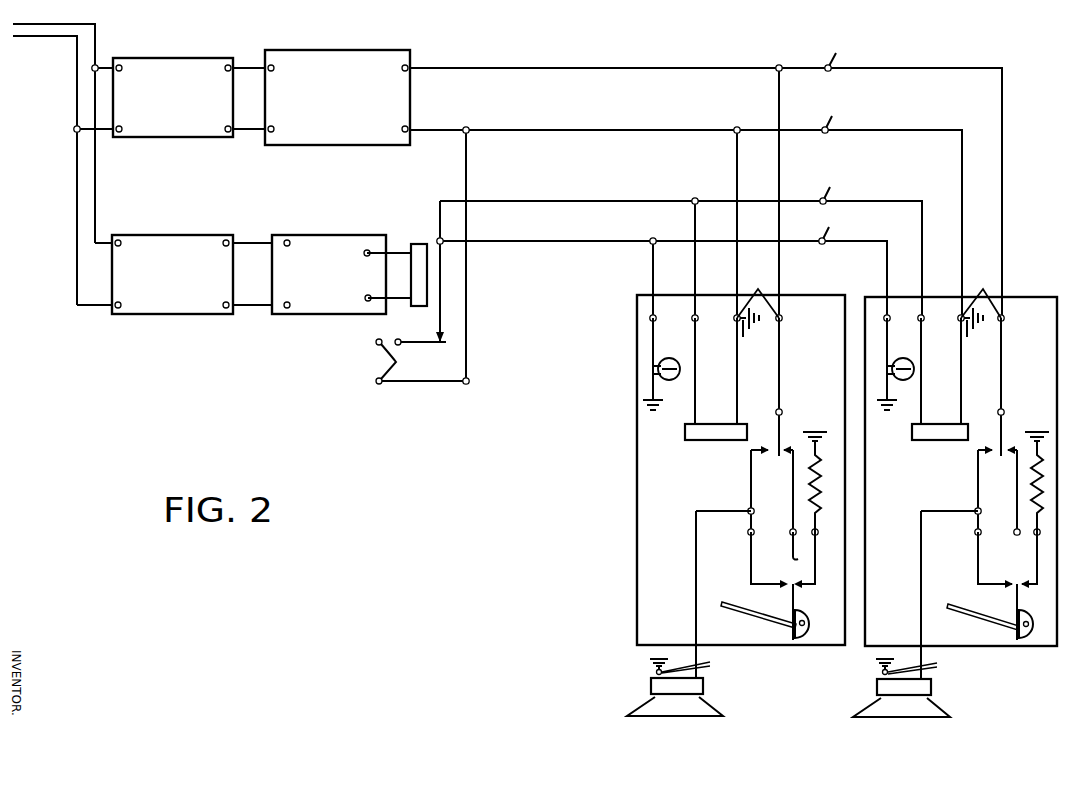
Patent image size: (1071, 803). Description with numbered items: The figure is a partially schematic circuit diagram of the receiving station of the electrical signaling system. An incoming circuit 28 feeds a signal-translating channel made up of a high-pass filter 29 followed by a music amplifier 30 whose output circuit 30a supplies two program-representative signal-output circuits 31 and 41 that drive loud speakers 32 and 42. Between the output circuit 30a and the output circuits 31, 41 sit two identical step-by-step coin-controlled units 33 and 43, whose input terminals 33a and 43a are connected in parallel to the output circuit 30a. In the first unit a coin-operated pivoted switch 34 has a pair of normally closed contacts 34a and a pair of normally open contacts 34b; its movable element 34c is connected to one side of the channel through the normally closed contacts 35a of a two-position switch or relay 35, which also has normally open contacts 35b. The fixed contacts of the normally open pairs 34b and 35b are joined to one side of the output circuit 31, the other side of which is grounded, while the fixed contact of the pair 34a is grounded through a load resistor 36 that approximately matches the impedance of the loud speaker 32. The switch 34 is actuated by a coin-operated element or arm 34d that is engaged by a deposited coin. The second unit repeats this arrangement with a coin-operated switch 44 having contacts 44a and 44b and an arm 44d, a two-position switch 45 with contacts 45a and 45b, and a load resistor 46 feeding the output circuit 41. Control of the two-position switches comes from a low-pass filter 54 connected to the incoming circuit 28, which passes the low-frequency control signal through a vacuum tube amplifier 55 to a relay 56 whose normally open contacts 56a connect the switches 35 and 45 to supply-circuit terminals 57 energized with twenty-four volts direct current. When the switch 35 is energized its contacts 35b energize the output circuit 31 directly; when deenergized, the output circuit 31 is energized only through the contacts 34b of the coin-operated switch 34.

The incoming circuit 28 is at (53, 25).
The high-pass filter 29 is at (166, 58).
The music amplifier 30 is at (343, 58).
The output circuit 30a is at (572, 130).
The low-pass filter 54 is at (168, 238).
The vacuum tube amplifier 55 is at (334, 240).
The relay 56 is at (420, 244).
The normally open contacts 56a is at (437, 338).
The supply-circuit terminals 57 is at (365, 361).
The step-by-step coin-controlled unit 33 is at (641, 307).
The input terminals 33a is at (758, 301).
The coin-operated pivoted switch 34 is at (748, 640).
The normally closed contacts 34a is at (797, 589).
The normally open contacts 34b is at (790, 583).
The movable element 34c is at (776, 547).
The coin-operated element or arm 34d is at (777, 628).
The two-position switch or relay 35 is at (719, 440).
The normally closed contacts 35a is at (783, 452).
The normally open contacts 35b is at (777, 452).
The load resistor 36 is at (680, 373).
The signal-output circuit 31 is at (694, 675).
The loud speaker 32 is at (672, 712).
The step-by-step coin-controlled unit 43 is at (1033, 310).
The input terminals 43a is at (983, 301).
The coin-operated pivoted switch 44 is at (970, 641).
The normally closed contacts 44a is at (1020, 590).
The normally open contacts 44b is at (1010, 581).
The coin-operated element or arm 44d is at (1003, 628).
The two-position switch or relay 45 is at (944, 440).
The normally closed contacts 45a is at (1005, 452).
The normally open contacts 45b is at (999, 452).
The load resistor 46 is at (1035, 493).
The signal-output circuit 41 is at (920, 676).
The loud speaker 42 is at (898, 712).